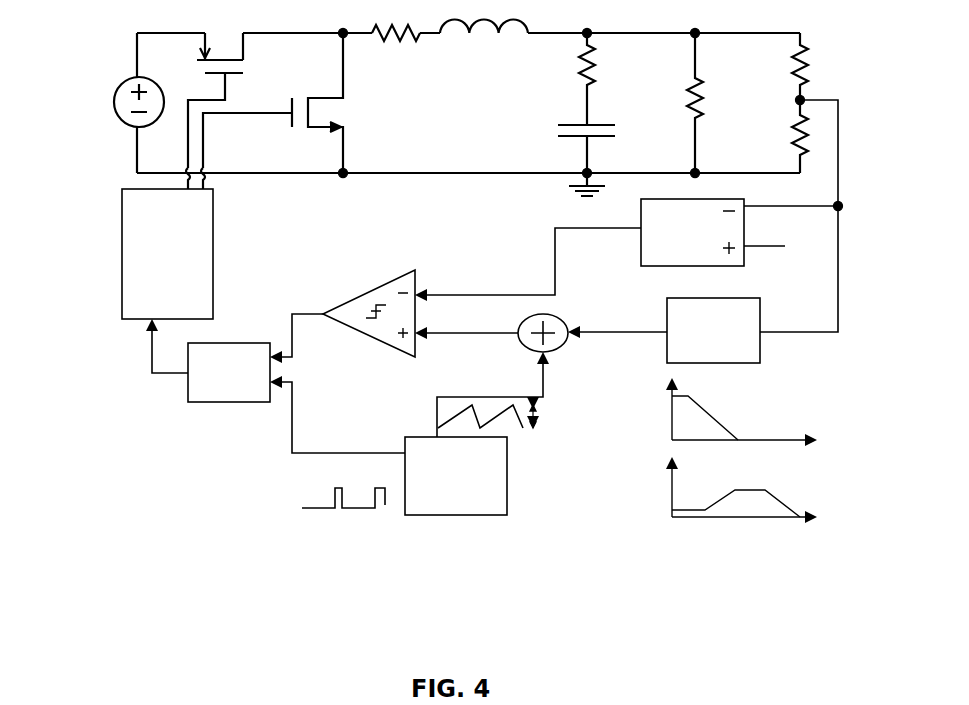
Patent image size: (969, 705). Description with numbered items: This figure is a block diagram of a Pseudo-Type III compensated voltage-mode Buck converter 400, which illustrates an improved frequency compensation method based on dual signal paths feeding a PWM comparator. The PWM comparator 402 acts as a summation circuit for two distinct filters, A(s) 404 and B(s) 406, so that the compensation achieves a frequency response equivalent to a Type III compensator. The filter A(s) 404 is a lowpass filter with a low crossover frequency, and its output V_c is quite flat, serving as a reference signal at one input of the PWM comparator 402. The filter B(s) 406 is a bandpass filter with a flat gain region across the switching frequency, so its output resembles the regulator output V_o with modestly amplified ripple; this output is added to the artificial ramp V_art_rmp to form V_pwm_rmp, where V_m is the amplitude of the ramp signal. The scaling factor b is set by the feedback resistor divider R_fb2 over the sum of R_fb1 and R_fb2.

The Pseudo-Type III compensated voltage-mode Buck converter 400 is at (76, 254).
The PWM comparator 402 is at (404, 270).
The filter A(s) 404 is at (662, 256).
The filter B(s) 406 is at (740, 363).